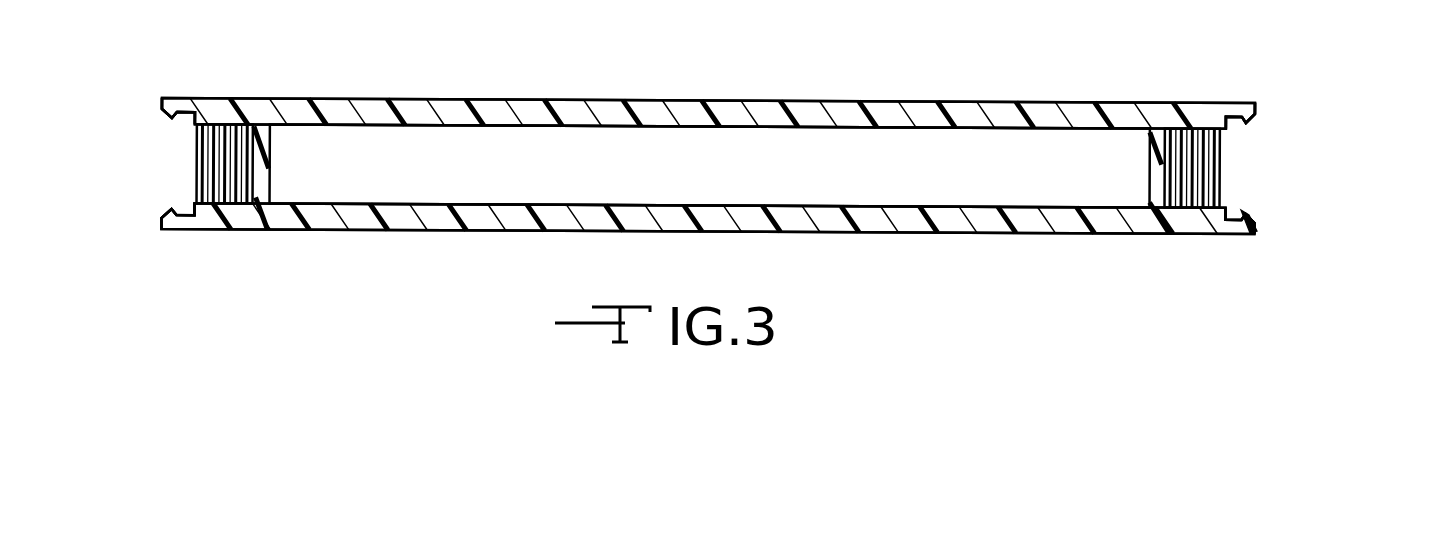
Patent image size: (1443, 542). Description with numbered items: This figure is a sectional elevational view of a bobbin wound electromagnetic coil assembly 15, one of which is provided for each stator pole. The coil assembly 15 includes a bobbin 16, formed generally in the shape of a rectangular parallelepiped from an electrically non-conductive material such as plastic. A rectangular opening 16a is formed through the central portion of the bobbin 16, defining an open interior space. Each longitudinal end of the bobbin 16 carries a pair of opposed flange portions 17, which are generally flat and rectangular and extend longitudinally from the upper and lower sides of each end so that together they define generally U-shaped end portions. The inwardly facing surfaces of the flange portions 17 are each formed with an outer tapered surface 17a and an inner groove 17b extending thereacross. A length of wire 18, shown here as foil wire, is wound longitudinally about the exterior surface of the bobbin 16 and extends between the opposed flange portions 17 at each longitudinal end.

The electromagnetic coil assembly 15 is at (1010, 87).
The bobbin 16 is at (643, 112).
The rectangular opening 16a is at (797, 160).
The flange portion 17 is at (233, 112).
The outer tapered surface 17a is at (172, 118).
The inner groove 17b is at (188, 126).
The wire 18 is at (222, 163).